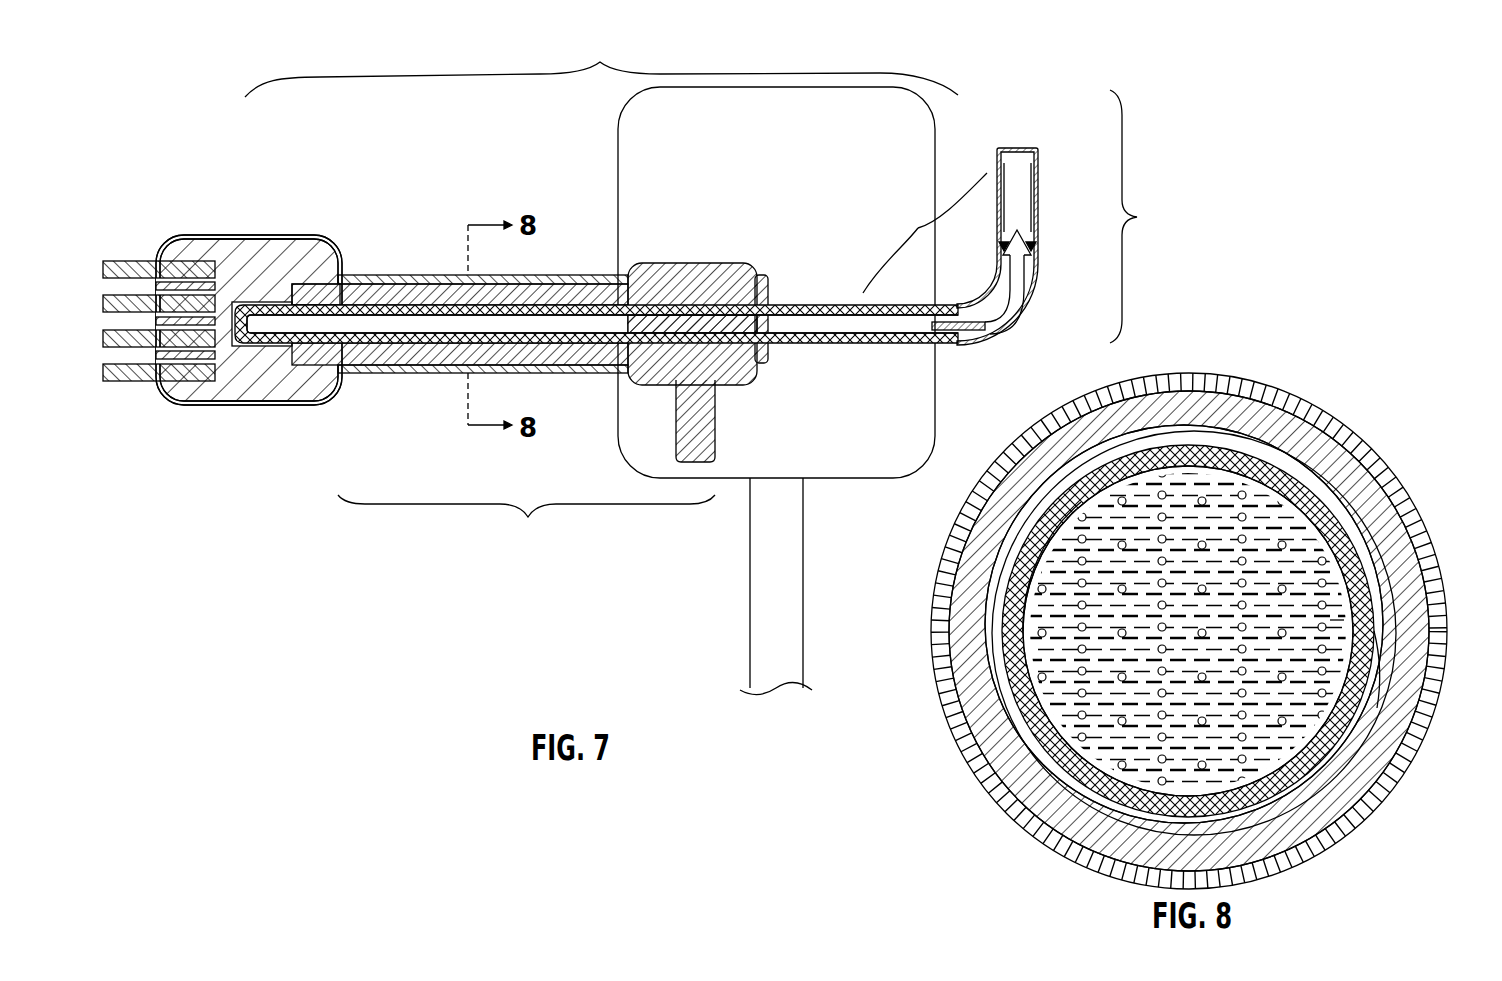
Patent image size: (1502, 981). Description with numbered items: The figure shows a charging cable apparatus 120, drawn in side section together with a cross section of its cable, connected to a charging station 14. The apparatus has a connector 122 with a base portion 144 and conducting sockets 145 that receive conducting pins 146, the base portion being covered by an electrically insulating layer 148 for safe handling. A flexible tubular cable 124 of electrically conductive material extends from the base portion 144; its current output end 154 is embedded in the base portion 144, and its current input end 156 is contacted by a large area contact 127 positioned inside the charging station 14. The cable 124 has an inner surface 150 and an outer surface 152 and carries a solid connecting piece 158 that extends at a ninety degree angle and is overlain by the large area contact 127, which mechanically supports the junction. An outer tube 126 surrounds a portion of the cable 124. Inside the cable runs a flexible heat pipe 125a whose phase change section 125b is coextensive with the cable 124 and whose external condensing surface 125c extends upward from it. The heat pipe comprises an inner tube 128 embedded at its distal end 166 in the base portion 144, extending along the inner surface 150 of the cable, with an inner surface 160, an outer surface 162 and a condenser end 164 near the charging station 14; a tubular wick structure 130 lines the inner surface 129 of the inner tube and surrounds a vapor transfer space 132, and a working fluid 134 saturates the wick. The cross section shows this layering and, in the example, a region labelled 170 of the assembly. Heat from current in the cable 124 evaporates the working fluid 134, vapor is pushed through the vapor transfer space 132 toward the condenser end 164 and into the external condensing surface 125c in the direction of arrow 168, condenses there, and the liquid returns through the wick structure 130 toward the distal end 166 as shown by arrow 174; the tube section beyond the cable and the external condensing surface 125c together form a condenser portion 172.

In FIG. 7, the charging station 14 is at (618, 153).
In FIG. 7, the charging cable apparatus 120 is at (213, 152).
In FIG. 7, the connector 122 is at (215, 237).
In FIG. 7, the flexible tubular cable 124 is at (403, 352).
In FIG. 8, the flexible tubular cable 124 is at (1360, 802).
In FIG. 7, the flexible heat pipe 125a is at (437, 396).
In FIG. 7, the phase change section 125b is at (601, 59).
In FIG. 7, the external condensing surface 125c is at (1153, 216).
In FIG. 7, the outer tube 126 is at (385, 280).
In FIG. 8, the outer tube 126 is at (1352, 430).
In FIG. 7, the large area contact 127 is at (700, 262).
In FIG. 7, the inner tube 128 is at (543, 345).
In FIG. 8, the inner tube 128 is at (1292, 500).
In FIG. 8, the inner surface 129 is at (1350, 625).
In FIG. 7, the tubular wick structure 130 is at (535, 337).
In FIG. 8, the tubular wick structure 130 is at (1197, 463).
In FIG. 7, the vapor transfer space 132 is at (465, 323).
In FIG. 8, the vapor transfer space 132 is at (1208, 644).
In FIG. 8, the working fluid 134 is at (1080, 690).
In FIG. 7, the base portion 144 is at (281, 235).
In FIG. 7, the conducting socket 145 is at (172, 240).
In FIG. 7, the conducting pin 146 is at (137, 261).
In FIG. 7, the electrically insulating layer 148 is at (285, 402).
In FIG. 8, the inner surface 150 is at (1377, 708).
In FIG. 8, the outer surface 152 is at (1397, 770).
In FIG. 7, the current output end 154 is at (285, 294).
In FIG. 7, the current input end 156 is at (765, 287).
In FIG. 7, the connecting piece 158 is at (718, 425).
In FIG. 8, the inner surface 160 is at (1105, 483).
In FIG. 8, the outer surface 162 is at (1100, 443).
In FIG. 7, the condenser end 164 is at (950, 343).
In FIG. 7, the distal end 166 is at (231, 330).
In FIG. 7, the arrow 168 is at (1008, 302).
In FIG. 7, the proximal region 170 is at (526, 522).
In FIG. 7, the condenser portion 172 is at (918, 228).
In FIG. 7, the arrow 174 is at (1036, 206).